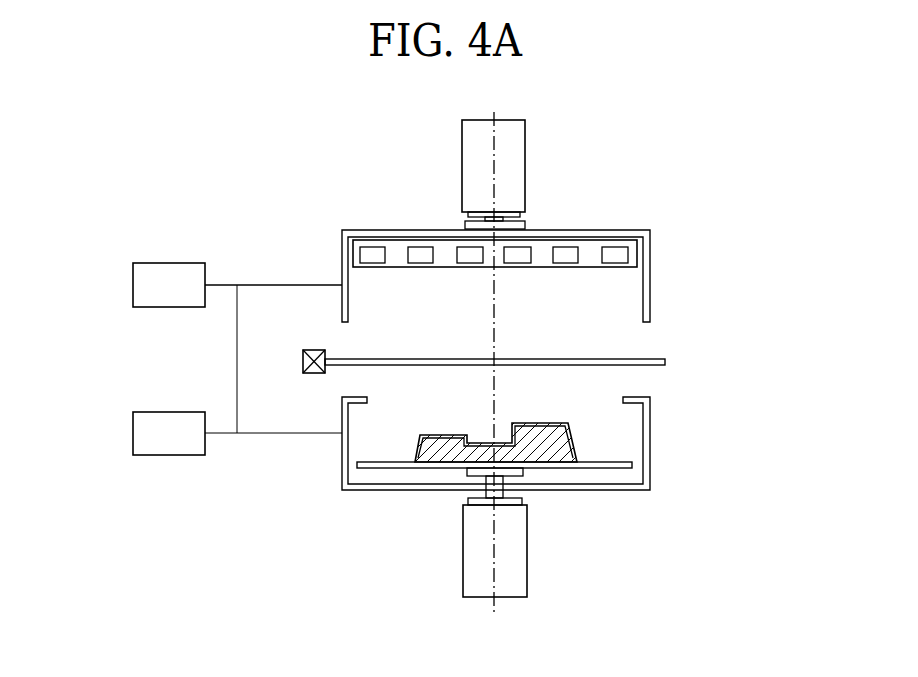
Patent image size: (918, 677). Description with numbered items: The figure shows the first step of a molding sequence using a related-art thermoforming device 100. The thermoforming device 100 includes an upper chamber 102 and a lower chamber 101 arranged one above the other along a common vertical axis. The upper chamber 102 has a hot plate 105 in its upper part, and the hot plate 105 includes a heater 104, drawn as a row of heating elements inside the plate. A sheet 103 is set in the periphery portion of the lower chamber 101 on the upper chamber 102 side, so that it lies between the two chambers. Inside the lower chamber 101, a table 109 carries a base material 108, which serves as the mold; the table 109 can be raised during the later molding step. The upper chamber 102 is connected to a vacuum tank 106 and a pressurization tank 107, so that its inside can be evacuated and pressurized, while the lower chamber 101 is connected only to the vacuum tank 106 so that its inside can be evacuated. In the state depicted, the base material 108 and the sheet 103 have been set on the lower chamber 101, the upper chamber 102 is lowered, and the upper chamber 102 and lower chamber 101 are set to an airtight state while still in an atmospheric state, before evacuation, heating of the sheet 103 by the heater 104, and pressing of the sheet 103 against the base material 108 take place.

The thermoforming device 100 is at (748, 226).
The lower chamber 101 is at (650, 450).
The upper chamber 102 is at (650, 278).
The sheet 103 is at (640, 359).
The heater 104 is at (415, 242).
The hot plate 105 is at (638, 247).
The vacuum tank 106 is at (133, 432).
The pressurization tank 107 is at (133, 283).
The base material 108 is at (563, 425).
The table 109 is at (587, 468).